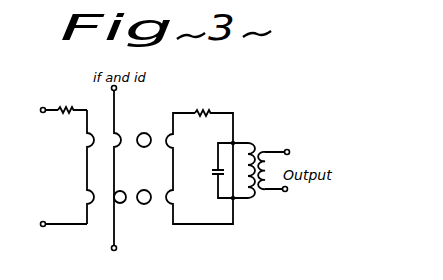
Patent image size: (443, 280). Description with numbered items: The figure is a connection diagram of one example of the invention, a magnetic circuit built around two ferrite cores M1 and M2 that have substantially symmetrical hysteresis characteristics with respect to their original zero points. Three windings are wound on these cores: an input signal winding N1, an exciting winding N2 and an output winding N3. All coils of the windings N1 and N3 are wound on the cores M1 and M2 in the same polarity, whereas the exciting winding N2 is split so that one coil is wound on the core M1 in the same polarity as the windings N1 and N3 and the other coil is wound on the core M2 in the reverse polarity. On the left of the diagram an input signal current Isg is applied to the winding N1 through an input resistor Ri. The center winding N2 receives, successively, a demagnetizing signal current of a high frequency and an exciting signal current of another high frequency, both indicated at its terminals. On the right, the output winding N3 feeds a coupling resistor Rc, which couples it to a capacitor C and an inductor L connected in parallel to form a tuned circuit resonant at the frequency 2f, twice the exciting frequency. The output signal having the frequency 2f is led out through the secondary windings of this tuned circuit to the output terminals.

The input signal current Isg is at (49, 165).
The input resistor Ri is at (72, 98).
The input signal winding N1 is at (79, 167).
The exciting winding N2 is at (109, 168).
The output winding N3 is at (199, 168).
The ferrite core M1 is at (145, 133).
The ferrite core M2 is at (145, 204).
The coupling resistor Rc is at (205, 100).
The capacitor C is at (215, 170).
The inductor L is at (241, 170).
The output frequency 2f is at (250, 143).